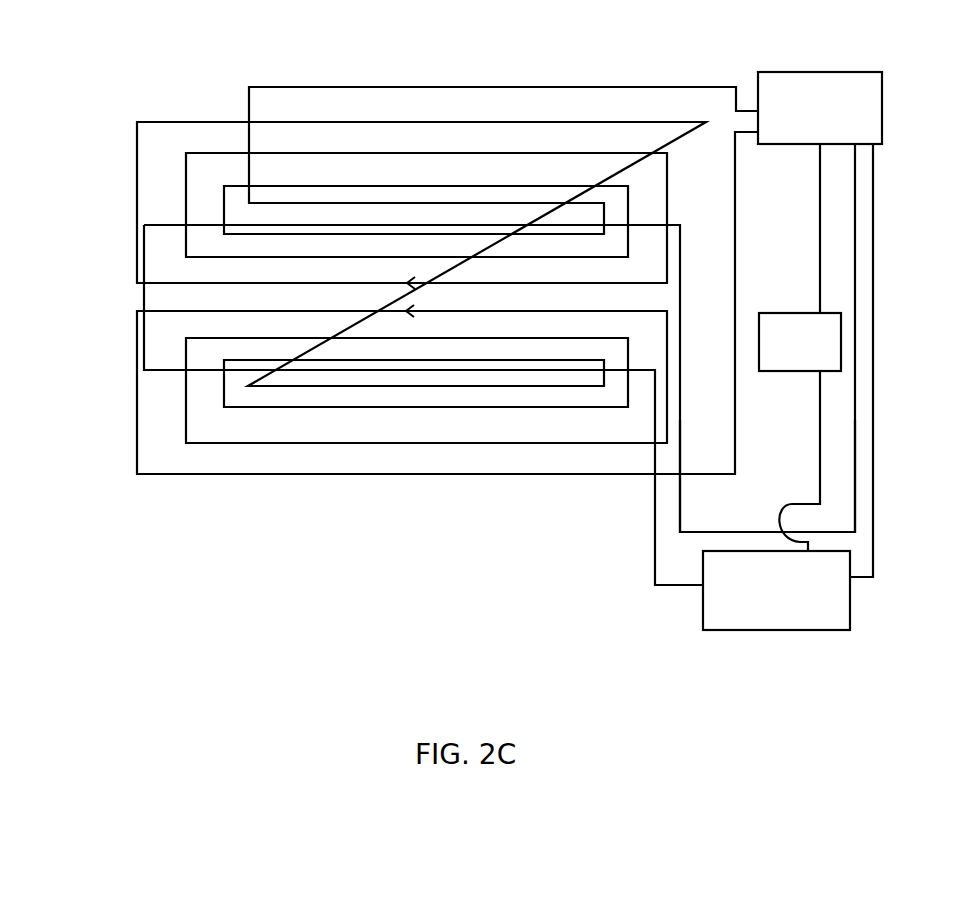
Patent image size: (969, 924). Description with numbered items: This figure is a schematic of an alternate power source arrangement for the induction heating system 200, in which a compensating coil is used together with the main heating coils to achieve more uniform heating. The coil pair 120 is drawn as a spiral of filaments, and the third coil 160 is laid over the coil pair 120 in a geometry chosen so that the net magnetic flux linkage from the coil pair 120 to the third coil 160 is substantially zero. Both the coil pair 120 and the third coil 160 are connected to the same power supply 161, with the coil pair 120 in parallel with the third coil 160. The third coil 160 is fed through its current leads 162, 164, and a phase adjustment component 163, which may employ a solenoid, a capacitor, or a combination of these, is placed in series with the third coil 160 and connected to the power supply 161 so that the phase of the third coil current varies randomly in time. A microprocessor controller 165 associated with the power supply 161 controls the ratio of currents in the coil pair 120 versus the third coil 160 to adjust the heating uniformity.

The induction heating system 200 is at (364, 67).
The coil pair 120 is at (122, 299).
The third coil 160 is at (680, 270).
The power supply 161 is at (788, 144).
The current lead 162 is at (680, 512).
The phase adjustment component 163 is at (703, 623).
The current lead 164 is at (655, 500).
The microprocessor controller 165 is at (777, 371).